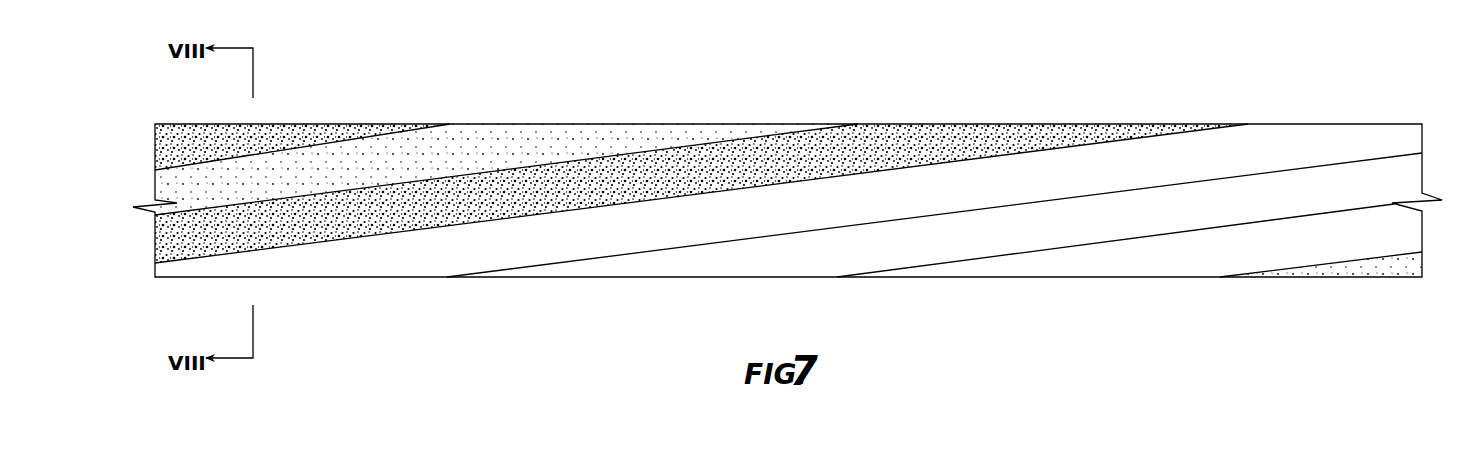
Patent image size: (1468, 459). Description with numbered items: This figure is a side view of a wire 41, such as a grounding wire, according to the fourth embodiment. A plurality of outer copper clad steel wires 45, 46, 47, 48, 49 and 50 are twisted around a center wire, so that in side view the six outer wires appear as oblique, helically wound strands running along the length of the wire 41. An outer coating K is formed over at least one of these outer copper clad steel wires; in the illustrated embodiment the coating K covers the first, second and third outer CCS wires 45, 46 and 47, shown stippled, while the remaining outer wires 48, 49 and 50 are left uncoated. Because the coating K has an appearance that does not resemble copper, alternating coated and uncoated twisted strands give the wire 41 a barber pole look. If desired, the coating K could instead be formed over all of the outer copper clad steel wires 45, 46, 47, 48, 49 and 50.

The wire 41 is at (977, 66).
The first outer copper clad steel wire 45 is at (272, 122).
The second outer copper clad steel wire 46 is at (483, 122).
The third outer copper clad steel wire 47 is at (953, 118).
The outer copper clad steel wire 48 is at (378, 283).
The outer copper clad steel wire 49 is at (690, 281).
The outer copper clad steel wire 50 is at (1085, 281).
The outer coating K is at (305, 127).